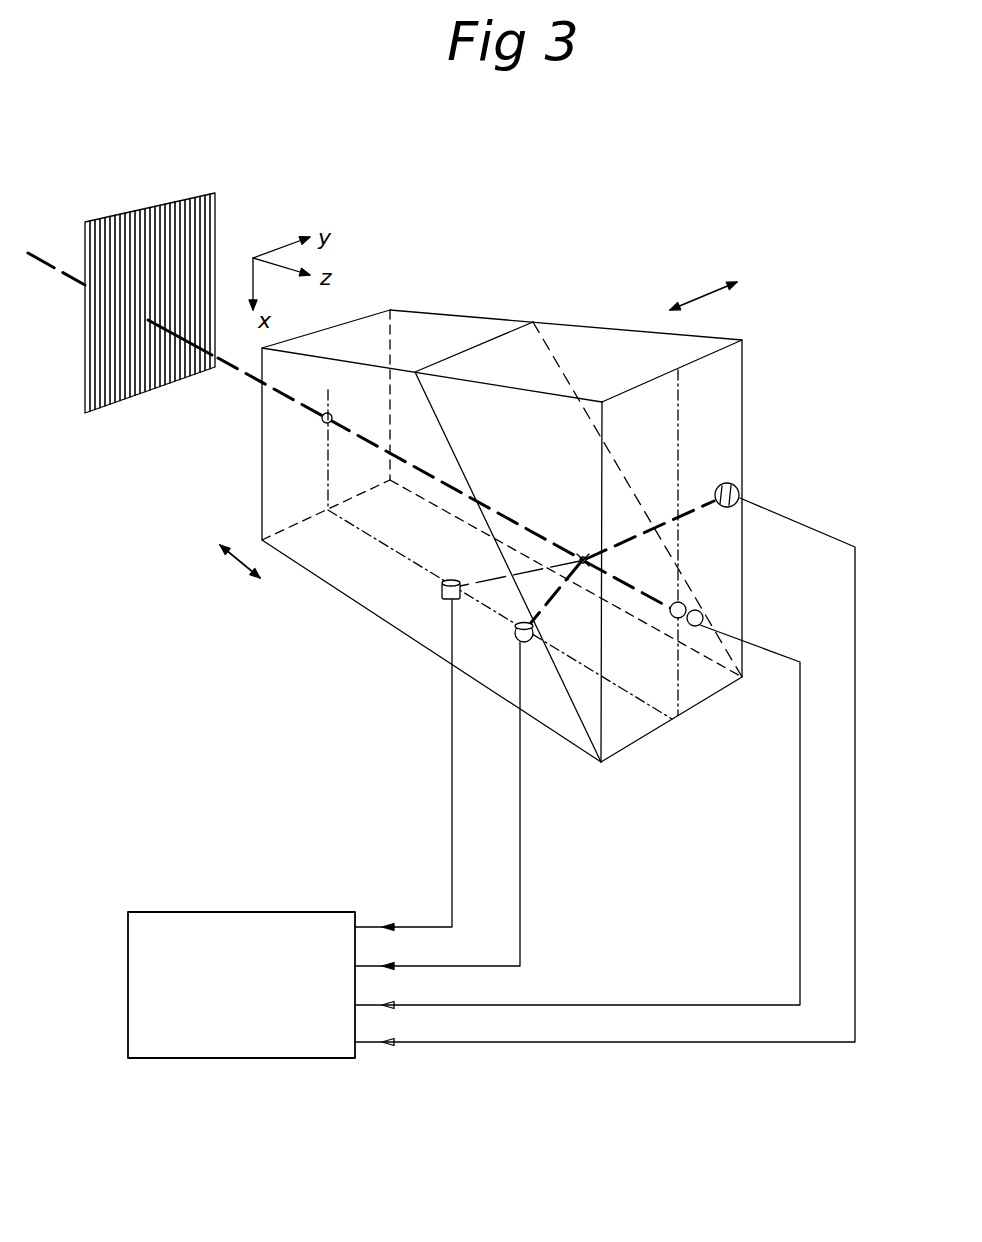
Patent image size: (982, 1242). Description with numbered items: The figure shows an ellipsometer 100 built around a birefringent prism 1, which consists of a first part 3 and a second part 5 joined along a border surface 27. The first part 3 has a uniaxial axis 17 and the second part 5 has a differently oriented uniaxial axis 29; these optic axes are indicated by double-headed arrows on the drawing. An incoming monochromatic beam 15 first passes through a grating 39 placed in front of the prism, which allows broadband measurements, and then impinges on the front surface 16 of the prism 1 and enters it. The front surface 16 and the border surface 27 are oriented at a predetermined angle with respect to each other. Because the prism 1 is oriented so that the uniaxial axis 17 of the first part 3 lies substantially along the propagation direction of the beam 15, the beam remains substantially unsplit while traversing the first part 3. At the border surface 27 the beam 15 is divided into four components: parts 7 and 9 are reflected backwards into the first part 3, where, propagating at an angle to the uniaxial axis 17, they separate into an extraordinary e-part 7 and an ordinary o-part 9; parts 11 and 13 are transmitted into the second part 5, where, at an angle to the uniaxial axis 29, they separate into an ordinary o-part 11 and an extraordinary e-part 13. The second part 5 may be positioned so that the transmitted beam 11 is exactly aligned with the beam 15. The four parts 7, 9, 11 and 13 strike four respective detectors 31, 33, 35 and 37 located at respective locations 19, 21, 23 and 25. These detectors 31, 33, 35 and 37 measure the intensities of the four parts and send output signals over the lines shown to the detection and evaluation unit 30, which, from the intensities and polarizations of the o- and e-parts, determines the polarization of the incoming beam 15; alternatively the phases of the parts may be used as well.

The prism 1 is at (317, 550).
The first part 3 is at (428, 333).
The second part 5 is at (733, 367).
The extraordinary part 7 is at (473, 574).
The ordinary part 9 is at (546, 598).
The ordinary part 11 is at (655, 607).
The extraordinary part 13 is at (632, 527).
The monochromatic beam 15 is at (210, 352).
The front surface 16 is at (360, 343).
The uniaxial axis 17 is at (220, 563).
The location 19 is at (433, 580).
The location 21 is at (512, 636).
The location 23 is at (700, 592).
The location 25 is at (723, 487).
The border surface 27 is at (577, 380).
The uniaxial axis 29 is at (702, 287).
The detection and evaluation unit 30 is at (203, 932).
The detector 31 is at (440, 600).
The detector 33 is at (527, 643).
The detector 35 is at (690, 614).
The detector 37 is at (742, 498).
The grating 39 is at (197, 228).
The ellipsometer 100 is at (513, 297).